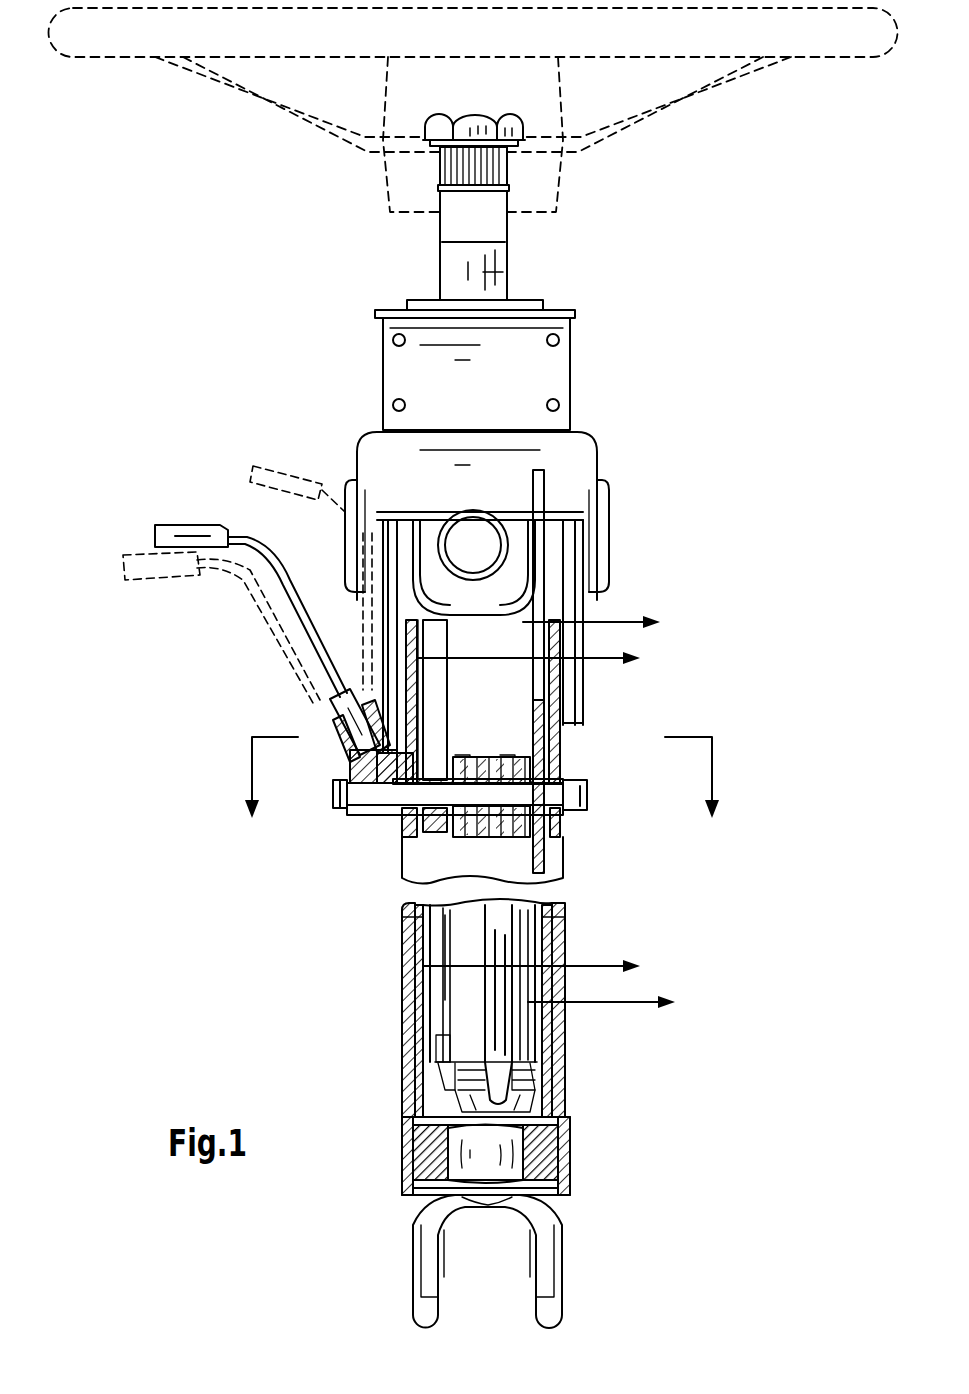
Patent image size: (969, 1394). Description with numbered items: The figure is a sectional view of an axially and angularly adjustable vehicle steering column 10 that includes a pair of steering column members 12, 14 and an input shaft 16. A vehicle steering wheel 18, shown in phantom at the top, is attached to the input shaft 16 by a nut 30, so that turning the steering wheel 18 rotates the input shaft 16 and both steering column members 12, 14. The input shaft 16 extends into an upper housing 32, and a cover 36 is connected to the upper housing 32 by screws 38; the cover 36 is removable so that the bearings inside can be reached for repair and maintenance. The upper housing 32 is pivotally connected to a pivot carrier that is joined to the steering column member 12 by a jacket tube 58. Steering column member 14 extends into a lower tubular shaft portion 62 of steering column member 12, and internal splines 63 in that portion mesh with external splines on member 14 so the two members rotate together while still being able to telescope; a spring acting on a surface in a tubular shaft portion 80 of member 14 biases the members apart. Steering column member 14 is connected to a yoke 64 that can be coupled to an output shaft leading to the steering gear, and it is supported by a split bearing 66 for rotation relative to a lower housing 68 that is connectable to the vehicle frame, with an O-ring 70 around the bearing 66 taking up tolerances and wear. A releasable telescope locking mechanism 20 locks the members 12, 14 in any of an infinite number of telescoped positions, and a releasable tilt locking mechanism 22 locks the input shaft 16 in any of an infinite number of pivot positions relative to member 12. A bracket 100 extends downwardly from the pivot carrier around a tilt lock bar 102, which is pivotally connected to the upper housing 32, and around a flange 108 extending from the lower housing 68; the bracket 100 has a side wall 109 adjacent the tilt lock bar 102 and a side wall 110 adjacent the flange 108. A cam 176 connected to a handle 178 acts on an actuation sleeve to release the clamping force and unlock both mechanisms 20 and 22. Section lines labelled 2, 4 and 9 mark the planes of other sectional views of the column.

The vehicle steering column 10 is at (403, 721).
The steering column member 12 is at (468, 983).
The steering column member 14 is at (435, 1088).
The input shaft 16 is at (487, 273).
The vehicle steering wheel 18 is at (102, 28).
The releasable telescope locking mechanism 20 is at (372, 842).
The releasable tilt locking mechanism 22 is at (578, 832).
The nut 30 is at (525, 122).
The upper housing 32 is at (388, 455).
The cover 36 is at (440, 345).
The screws 38 is at (394, 403).
The jacket tube 58 is at (405, 922).
The lower tubular shaft portion 62 is at (462, 1020).
The internal splines 63 is at (440, 1040).
The yoke 64 is at (560, 1115).
The split bearing 66 is at (565, 1137).
The lower housing 68 is at (560, 1023).
The O-ring 70 is at (576, 1162).
The tubular shaft portion 80 is at (520, 1075).
The bracket 100 is at (531, 760).
The tilt lock bar 102 is at (545, 548).
The flange 108 is at (398, 628).
The side wall 109 is at (561, 692).
The side wall 110 is at (407, 668).
The cam 176 is at (355, 760).
The handle 178 is at (172, 538).
The section line 2 is at (608, 813).
The section line 4 is at (541, 813).
The section line 9 is at (482, 794).